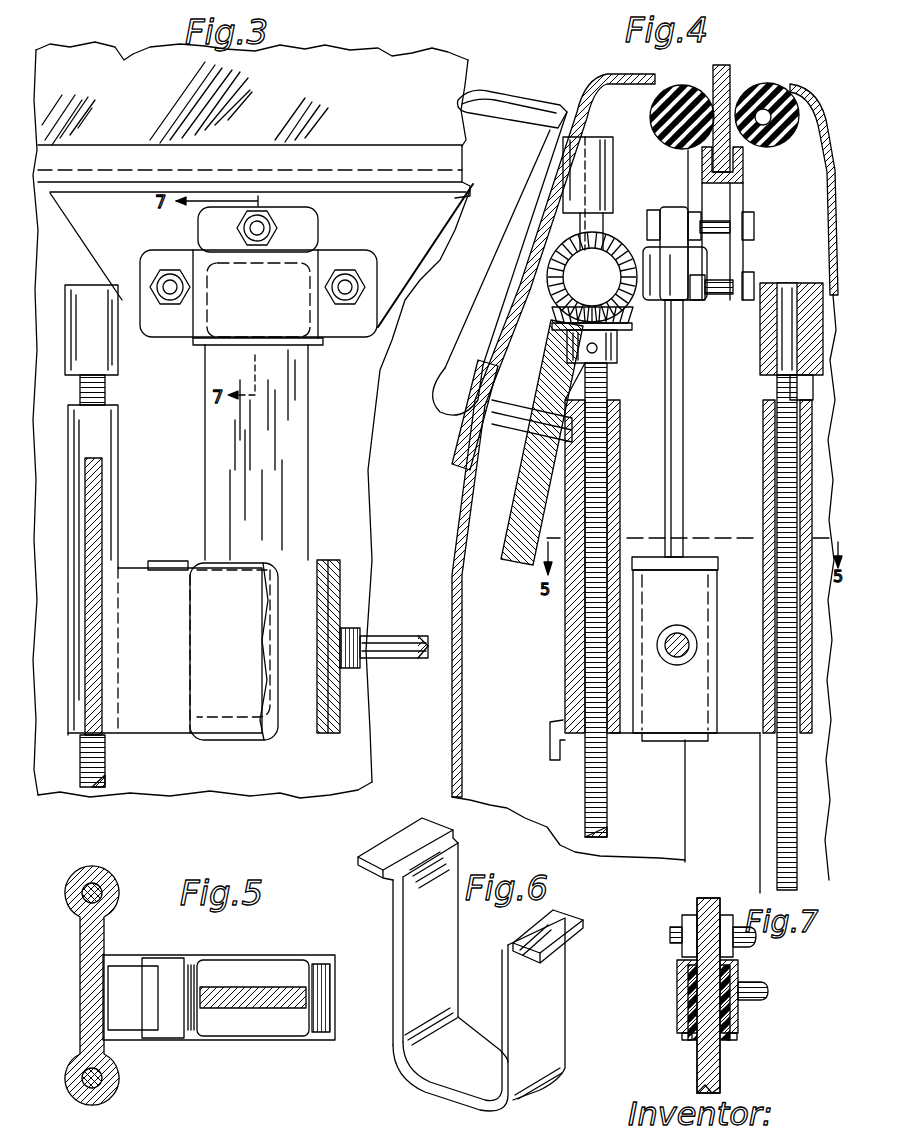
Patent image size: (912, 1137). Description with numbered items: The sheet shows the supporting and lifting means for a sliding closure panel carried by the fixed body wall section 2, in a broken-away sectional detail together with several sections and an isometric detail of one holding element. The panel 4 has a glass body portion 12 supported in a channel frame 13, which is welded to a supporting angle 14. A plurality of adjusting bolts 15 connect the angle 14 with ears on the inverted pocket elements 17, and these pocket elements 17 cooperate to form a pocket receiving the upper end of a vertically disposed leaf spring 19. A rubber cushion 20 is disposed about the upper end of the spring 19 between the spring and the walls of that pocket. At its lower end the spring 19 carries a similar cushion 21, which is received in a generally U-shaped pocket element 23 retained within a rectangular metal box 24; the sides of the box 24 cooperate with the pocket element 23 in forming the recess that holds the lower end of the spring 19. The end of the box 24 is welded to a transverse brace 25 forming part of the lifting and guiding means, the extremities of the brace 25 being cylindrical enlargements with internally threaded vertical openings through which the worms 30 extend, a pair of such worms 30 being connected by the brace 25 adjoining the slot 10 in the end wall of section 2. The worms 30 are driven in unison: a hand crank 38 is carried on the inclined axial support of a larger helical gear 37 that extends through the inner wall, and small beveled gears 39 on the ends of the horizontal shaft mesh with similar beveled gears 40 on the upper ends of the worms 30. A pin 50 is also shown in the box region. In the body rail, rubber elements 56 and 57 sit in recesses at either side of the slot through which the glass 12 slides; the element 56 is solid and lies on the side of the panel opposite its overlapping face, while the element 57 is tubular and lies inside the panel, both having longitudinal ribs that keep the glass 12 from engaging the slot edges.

In FIG. 4, the fixed body wall section 2 is at (465, 516).
In FIG. 3, the panel 4 is at (404, 40).
In FIG. 4, the panel 4 is at (741, 70).
In FIG. 4, the slot 10 is at (758, 781).
In FIG. 3, the glass body portion 12 is at (425, 86).
In FIG. 4, the glass body portion 12 is at (734, 78).
In FIG. 3, the channel frame 13 is at (462, 157).
In FIG. 4, the channel frame 13 is at (745, 172).
In FIG. 3, the supporting angle 14 is at (95, 240).
In FIG. 4, the supporting angle 14 is at (738, 203).
In FIG. 3, the adjusting bolt 15 is at (165, 286).
In FIG. 4, the adjusting bolt 15 is at (710, 228).
In FIG. 7, the adjusting bolt 15 is at (749, 979).
In FIG. 3, the inverted pocket element 17 is at (352, 250).
In FIG. 4, the inverted pocket element 17 is at (672, 208).
In FIG. 7, the inverted pocket element 17 is at (680, 982).
In FIG. 3, the leaf spring 19 is at (296, 418).
In FIG. 4, the leaf spring 19 is at (674, 433).
In FIG. 5, the leaf spring 19 is at (268, 1000).
In FIG. 7, the leaf spring 19 is at (722, 1068).
In FIG. 3, the cushion 20 is at (323, 345).
In FIG. 7, the cushion 20 is at (690, 1047).
In FIG. 3, the cushion 21 is at (262, 660).
In FIG. 5, the cushion 21 is at (292, 962).
In FIG. 3, the pocket element 23 is at (188, 566).
In FIG. 4, the pocket element 23 is at (702, 565).
In FIG. 5, the pocket element 23 is at (196, 963).
In FIG. 6, the pocket element 23 is at (470, 964).
In FIG. 3, the rectangular member or metal box 24 is at (180, 728).
In FIG. 4, the rectangular member or metal box 24 is at (717, 646).
In FIG. 5, the rectangular member or metal box 24 is at (124, 955).
In FIG. 3, the transverse brace 25 is at (98, 485).
In FIG. 4, the transverse brace 25 is at (715, 473).
In FIG. 5, the transverse brace 25 is at (86, 975).
In FIG. 3, the worm 30 is at (105, 775).
In FIG. 5, the worm 30 is at (100, 883).
In FIG. 4, the helical gear 37 is at (518, 563).
In FIG. 4, the hand crank 38 is at (498, 286).
In FIG. 4, the beveled gear 39 is at (640, 234).
In FIG. 4, the beveled gear 40 is at (637, 324).
In FIG. 3, the pivot pin 50 is at (404, 636).
In FIG. 4, the pivot pin 50 is at (680, 634).
In FIG. 4, the solid rubber element 56 is at (700, 87).
In FIG. 4, the tubular rubber element 57 is at (769, 85).